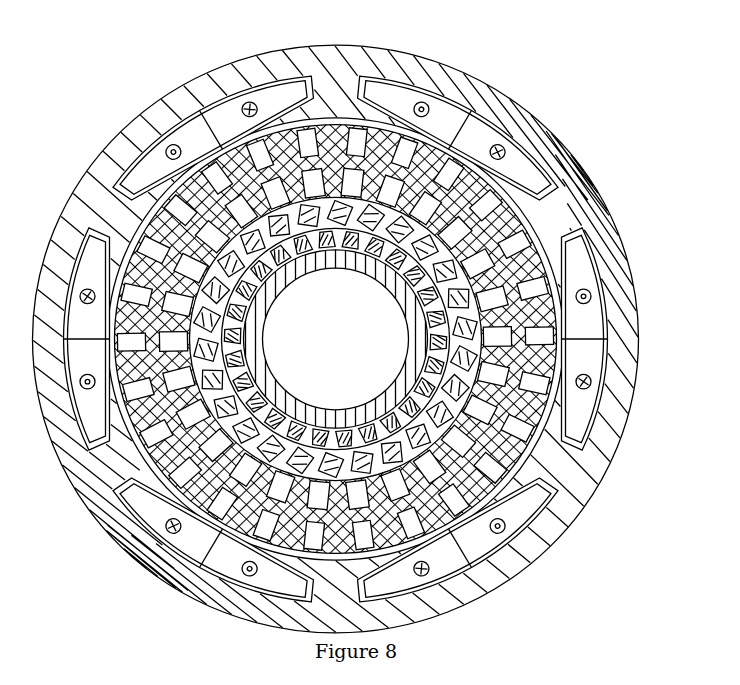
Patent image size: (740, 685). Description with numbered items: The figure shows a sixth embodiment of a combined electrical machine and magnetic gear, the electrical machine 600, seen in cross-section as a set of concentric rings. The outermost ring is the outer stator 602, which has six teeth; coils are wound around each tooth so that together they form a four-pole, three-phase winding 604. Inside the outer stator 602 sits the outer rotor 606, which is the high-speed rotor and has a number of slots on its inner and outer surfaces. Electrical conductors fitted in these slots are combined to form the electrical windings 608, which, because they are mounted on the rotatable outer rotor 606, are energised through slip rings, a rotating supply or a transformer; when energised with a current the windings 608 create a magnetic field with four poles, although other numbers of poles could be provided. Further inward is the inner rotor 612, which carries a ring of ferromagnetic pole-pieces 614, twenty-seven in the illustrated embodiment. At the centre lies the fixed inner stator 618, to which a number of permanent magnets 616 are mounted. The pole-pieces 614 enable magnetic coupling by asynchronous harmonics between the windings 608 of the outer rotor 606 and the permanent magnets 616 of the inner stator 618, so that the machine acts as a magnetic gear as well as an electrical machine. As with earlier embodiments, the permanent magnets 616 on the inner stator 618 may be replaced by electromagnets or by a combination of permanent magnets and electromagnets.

The electrical machine 600 is at (583, 521).
The outer stator 602 is at (146, 121).
The 3-phase winding 604 is at (107, 157).
The outer rotor 606 is at (503, 230).
The electrical windings 608 is at (523, 247).
The inner rotor 612 is at (321, 252).
The ferromagnetic pole-pieces 614 is at (397, 265).
The permanent magnets 616 is at (405, 393).
The inner stator 618 is at (263, 362).